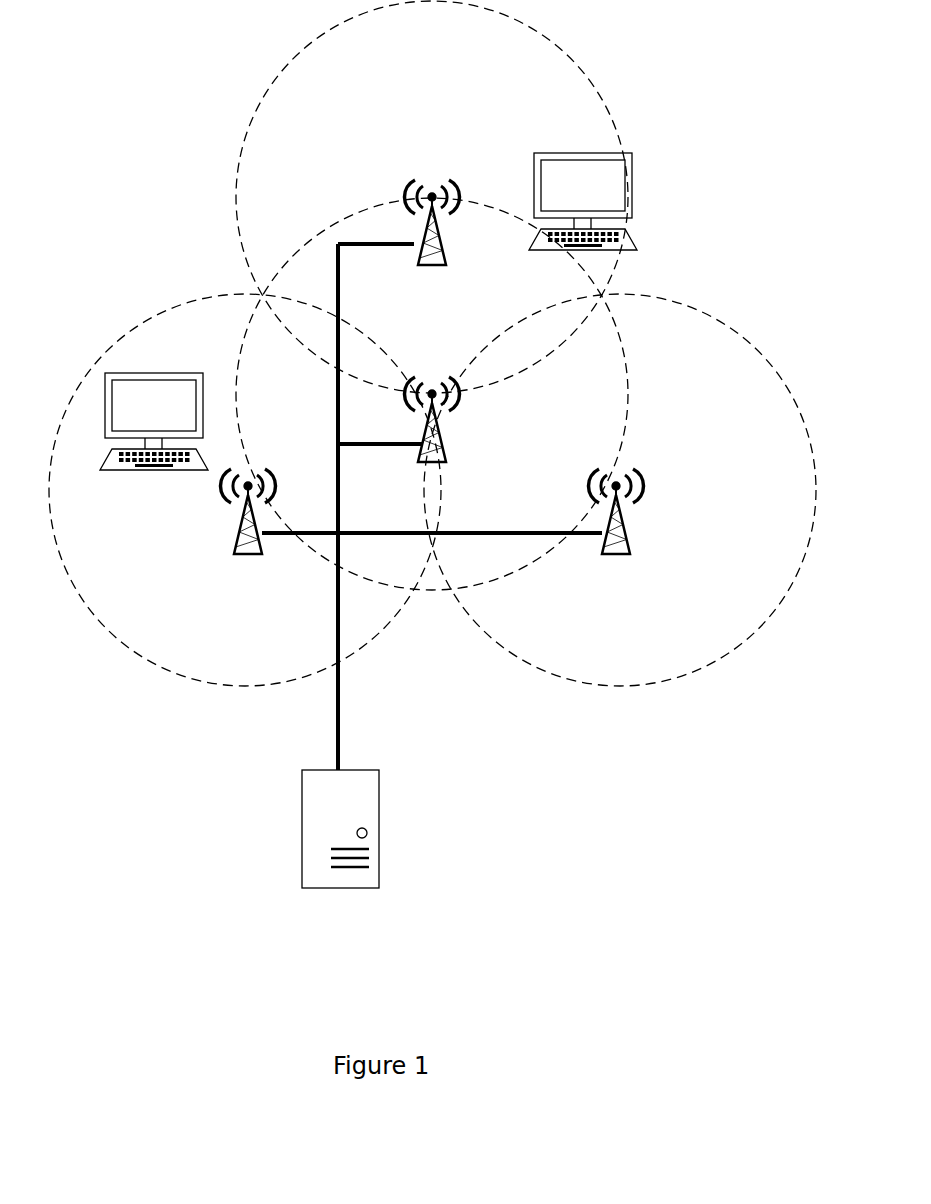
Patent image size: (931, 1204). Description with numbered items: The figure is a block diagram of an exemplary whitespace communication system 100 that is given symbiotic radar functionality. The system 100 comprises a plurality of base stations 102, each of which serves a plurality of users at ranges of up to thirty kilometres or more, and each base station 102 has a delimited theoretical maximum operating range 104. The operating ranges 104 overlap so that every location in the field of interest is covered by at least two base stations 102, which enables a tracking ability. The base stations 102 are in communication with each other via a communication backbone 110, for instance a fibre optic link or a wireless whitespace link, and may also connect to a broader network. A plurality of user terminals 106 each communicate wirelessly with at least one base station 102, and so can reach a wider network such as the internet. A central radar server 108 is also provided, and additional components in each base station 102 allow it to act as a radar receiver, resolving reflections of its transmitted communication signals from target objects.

The whitespace communication system 100 is at (124, 65).
The base station 102 is at (416, 285).
The theoretical maximum operating range 104 is at (240, 147).
The user terminal 106 is at (135, 372).
The central radar server 108 is at (385, 840).
The communication backbone 110 is at (336, 693).